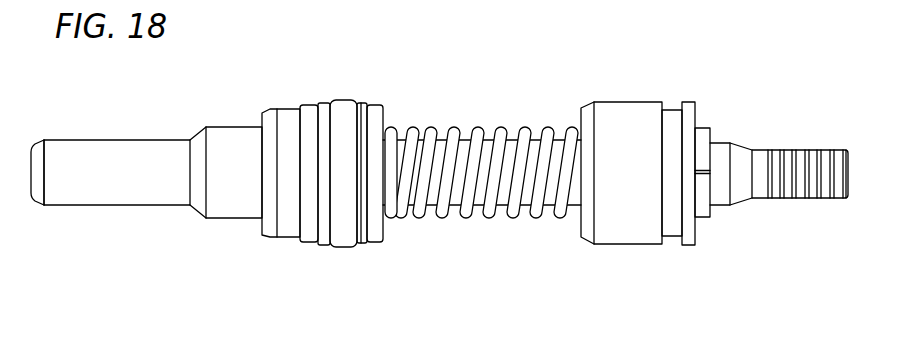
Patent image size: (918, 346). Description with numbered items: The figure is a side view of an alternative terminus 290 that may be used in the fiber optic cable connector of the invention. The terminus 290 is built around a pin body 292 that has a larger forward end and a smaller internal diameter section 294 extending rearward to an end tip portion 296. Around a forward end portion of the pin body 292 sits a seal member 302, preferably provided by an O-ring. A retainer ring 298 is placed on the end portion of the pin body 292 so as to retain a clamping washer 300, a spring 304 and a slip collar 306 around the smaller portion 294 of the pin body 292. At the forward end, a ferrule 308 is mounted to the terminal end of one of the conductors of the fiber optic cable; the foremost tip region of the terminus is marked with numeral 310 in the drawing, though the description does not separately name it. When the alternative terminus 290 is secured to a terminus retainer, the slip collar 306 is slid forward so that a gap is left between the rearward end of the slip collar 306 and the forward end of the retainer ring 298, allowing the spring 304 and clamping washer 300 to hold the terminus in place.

The alternative terminus 290 is at (652, 82).
The pin body 292 is at (222, 128).
The smaller internal diameter section 294 is at (513, 140).
The end tip portion 296 is at (788, 152).
The retainer ring 298 is at (705, 132).
The clamping washer 300 is at (380, 108).
The seal member 302 is at (344, 103).
The spring 304 is at (445, 217).
The slip collar 306 is at (615, 238).
The ferrule 308 is at (113, 198).
The tip 310 is at (30, 177).